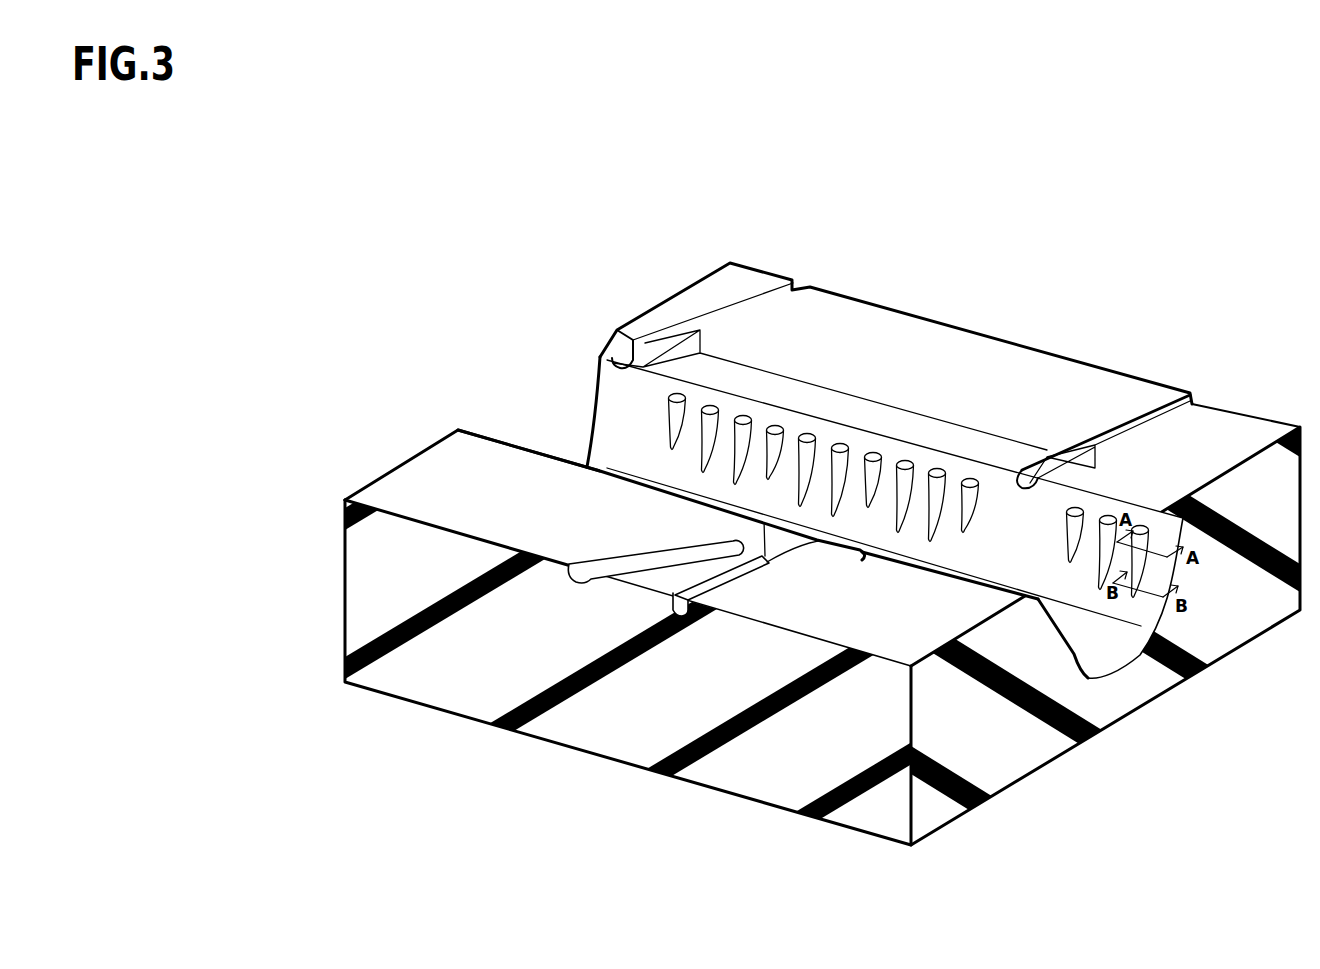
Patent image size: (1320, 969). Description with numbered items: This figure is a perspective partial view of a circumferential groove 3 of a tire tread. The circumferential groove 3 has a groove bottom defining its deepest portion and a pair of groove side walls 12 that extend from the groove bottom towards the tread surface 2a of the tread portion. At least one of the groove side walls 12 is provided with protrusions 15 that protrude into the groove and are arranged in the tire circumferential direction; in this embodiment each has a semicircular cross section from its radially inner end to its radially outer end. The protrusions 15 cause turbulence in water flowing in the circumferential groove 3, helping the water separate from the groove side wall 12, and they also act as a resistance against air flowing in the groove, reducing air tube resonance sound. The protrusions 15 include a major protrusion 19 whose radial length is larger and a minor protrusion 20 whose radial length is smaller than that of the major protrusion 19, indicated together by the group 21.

The tread surface 2a is at (423, 497).
The circumferential groove 3 is at (848, 501).
The groove side wall 12 is at (617, 397).
The major protrusion 19 is at (718, 423).
The minor protrusion 20 is at (677, 413).
The hole group 21 is at (909, 370).
The protrusion 15 is at (1073, 522).